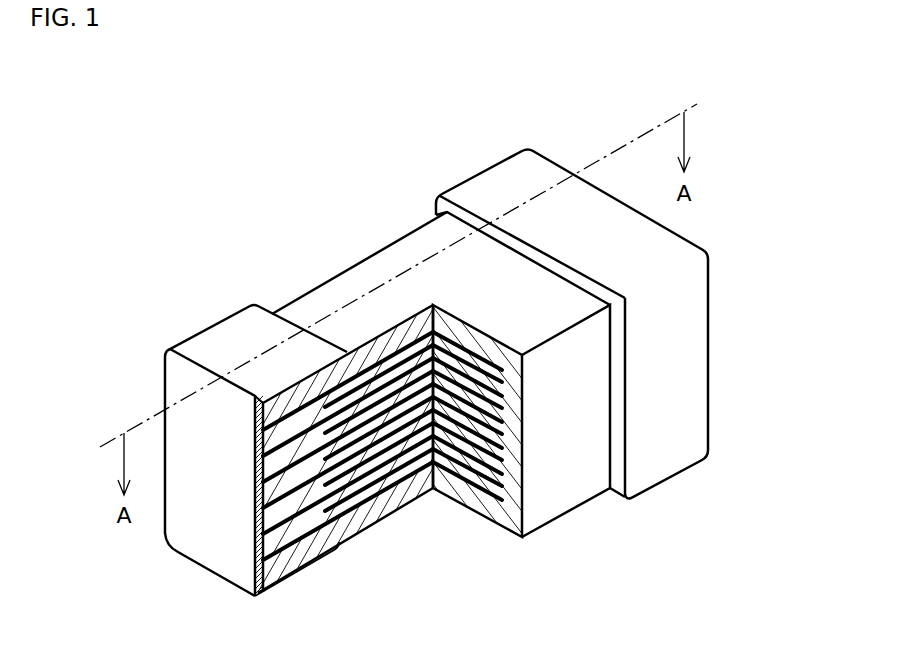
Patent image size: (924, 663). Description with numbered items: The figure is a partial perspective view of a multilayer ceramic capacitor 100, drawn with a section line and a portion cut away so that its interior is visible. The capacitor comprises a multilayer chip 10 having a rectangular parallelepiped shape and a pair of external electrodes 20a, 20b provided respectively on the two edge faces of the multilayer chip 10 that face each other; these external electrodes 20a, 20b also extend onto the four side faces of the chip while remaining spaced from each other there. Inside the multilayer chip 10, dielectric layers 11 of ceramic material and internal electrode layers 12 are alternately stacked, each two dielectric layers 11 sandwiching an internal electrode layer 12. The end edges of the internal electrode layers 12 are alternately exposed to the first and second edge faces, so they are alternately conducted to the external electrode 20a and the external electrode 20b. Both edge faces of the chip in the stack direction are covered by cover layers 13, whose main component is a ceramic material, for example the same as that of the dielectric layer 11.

The multilayer ceramic capacitor 100 is at (802, 88).
The multilayer chip 10 is at (300, 288).
The dielectric layer 11 is at (363, 495).
The internal electrode layer 12 is at (405, 486).
The cover layer 13 is at (404, 243).
The external electrode 20a is at (219, 323).
The external electrode 20b is at (486, 187).